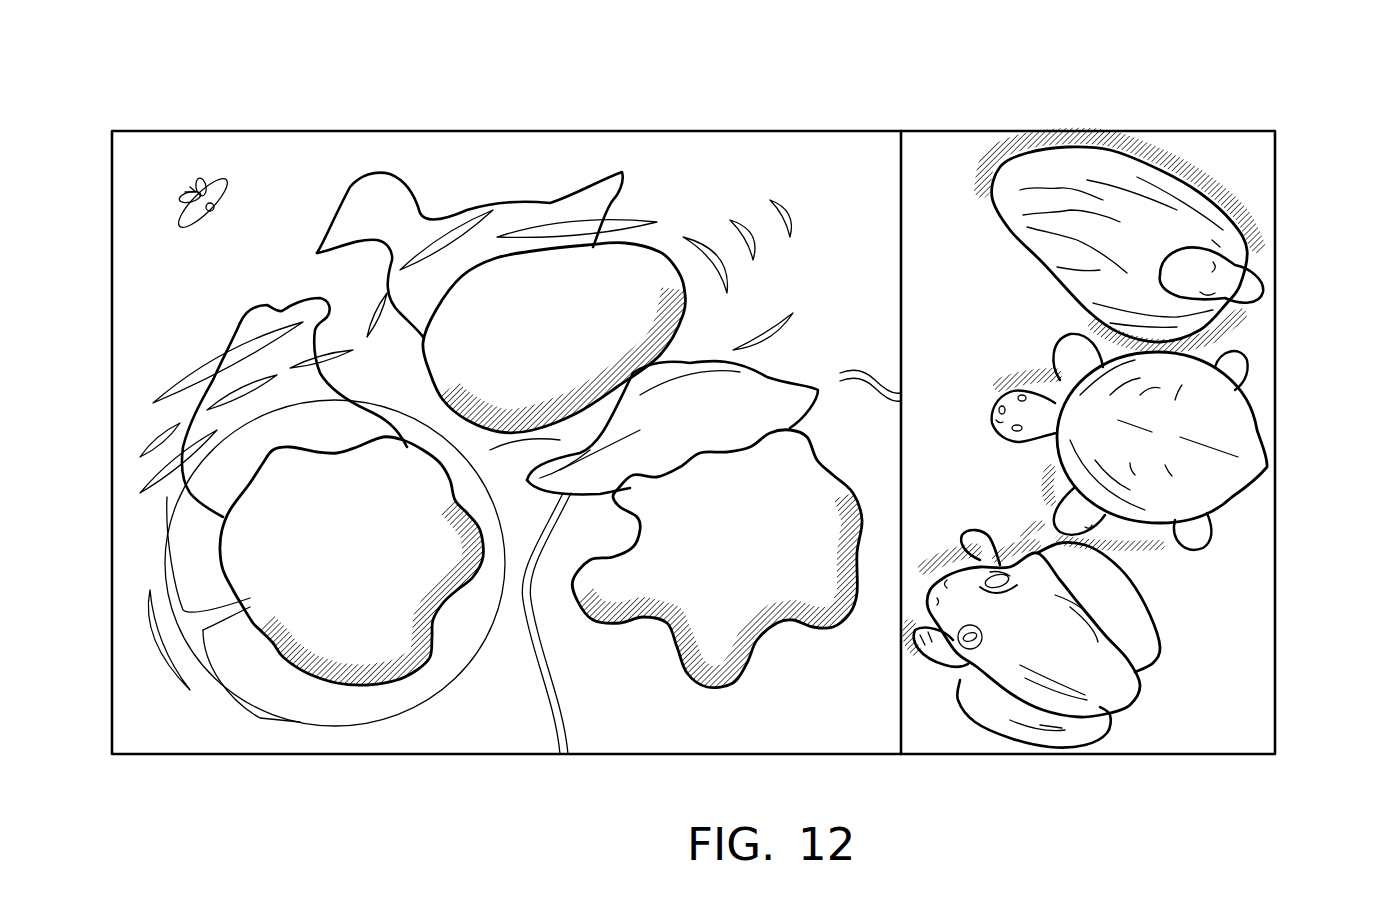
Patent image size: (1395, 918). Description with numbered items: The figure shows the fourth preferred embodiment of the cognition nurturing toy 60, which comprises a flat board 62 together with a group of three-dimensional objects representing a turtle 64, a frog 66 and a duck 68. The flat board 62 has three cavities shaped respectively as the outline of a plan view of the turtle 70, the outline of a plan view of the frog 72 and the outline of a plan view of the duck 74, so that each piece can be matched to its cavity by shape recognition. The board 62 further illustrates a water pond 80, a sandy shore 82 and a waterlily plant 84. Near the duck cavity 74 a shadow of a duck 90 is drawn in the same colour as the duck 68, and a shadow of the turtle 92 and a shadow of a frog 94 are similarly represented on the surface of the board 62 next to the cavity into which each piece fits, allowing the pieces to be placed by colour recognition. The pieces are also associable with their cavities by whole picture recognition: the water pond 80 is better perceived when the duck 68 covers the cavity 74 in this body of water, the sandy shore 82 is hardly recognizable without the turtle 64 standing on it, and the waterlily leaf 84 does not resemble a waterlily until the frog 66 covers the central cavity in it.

The cognition nurturing toy 60 is at (808, 113).
The flat board 62 is at (1278, 503).
The turtle 64 is at (1253, 410).
The frog 66 is at (1157, 623).
The duck 68 is at (1230, 222).
The turtle cavity 70 is at (722, 571).
The frog cavity 72 is at (335, 578).
The duck cavity 74 is at (545, 335).
The water pond 80 is at (280, 245).
The sandy shore 82 is at (673, 713).
The waterlily plant 84 is at (293, 690).
The shadow of a duck 90 is at (393, 197).
The shadow of the turtle 92 is at (760, 380).
The shadow of a frog 94 is at (245, 323).